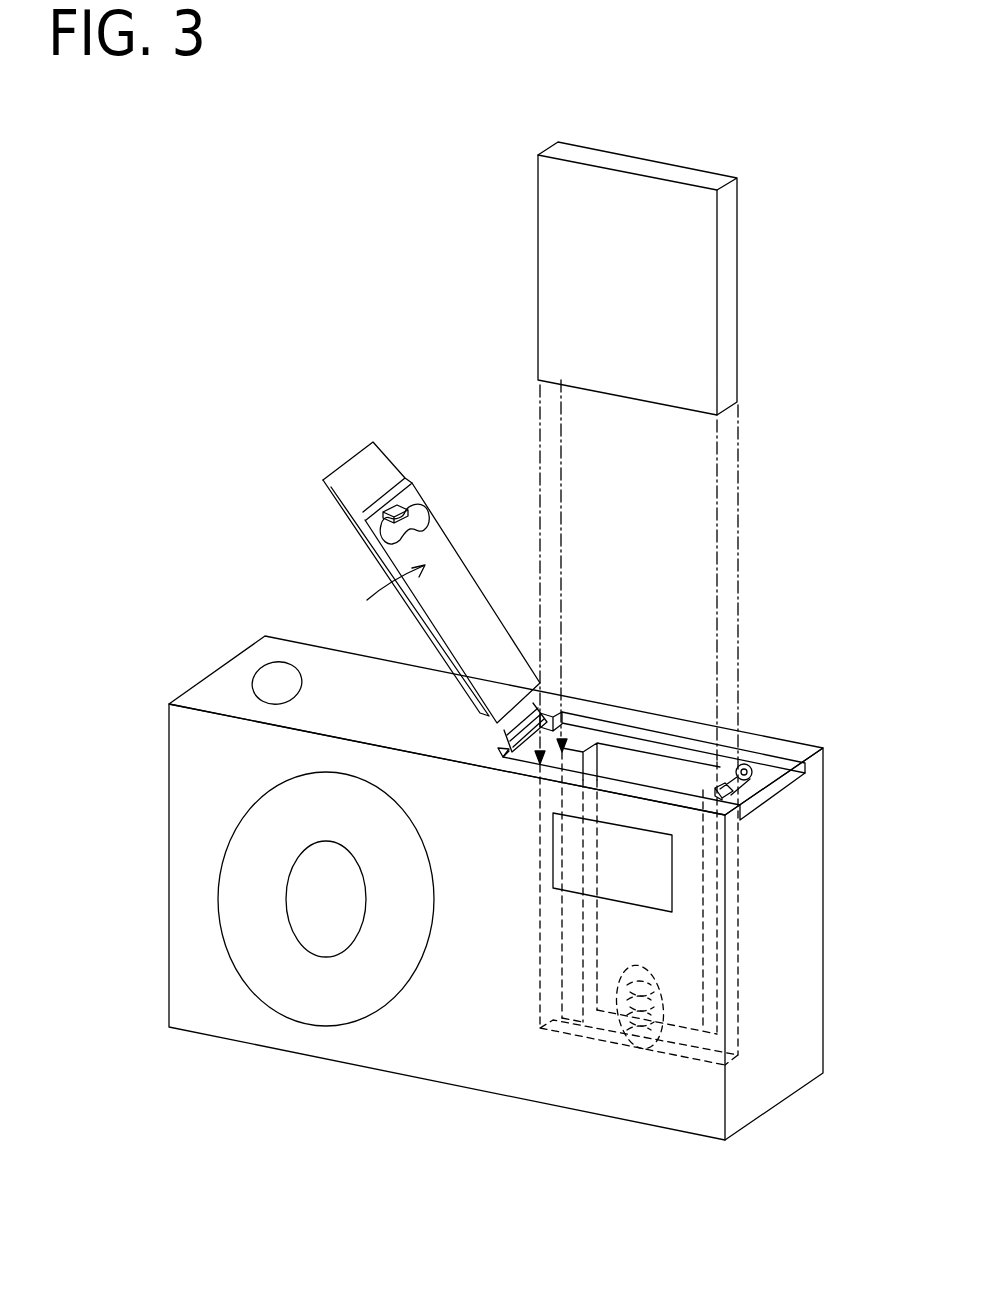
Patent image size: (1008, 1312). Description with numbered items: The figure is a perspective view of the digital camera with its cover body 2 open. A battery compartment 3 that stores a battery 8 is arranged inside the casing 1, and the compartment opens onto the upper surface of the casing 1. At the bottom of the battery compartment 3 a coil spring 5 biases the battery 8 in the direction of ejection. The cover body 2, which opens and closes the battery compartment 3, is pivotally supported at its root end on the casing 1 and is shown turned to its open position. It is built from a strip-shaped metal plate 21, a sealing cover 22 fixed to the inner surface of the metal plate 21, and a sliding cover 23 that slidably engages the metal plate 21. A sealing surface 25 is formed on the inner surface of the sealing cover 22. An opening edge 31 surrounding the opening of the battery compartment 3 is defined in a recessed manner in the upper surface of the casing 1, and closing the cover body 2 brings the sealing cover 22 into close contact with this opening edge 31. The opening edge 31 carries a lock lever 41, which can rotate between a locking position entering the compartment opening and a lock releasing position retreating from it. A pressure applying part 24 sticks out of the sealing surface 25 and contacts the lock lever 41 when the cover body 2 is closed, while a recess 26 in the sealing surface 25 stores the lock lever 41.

The casing 1 is at (442, 1055).
The cover body 2 is at (456, 404).
The battery compartment 3 is at (632, 765).
The coil spring 5 is at (625, 1062).
The battery 8 is at (727, 282).
The metal plate 21 is at (550, 690).
The sealing cover 22 is at (435, 540).
The sliding cover 23 is at (380, 462).
The pressure applying part 24 is at (383, 513).
The sealing surface 25 is at (375, 595).
The recess 26 is at (388, 530).
The opening edge 31 is at (676, 758).
The lock lever 41 is at (746, 798).